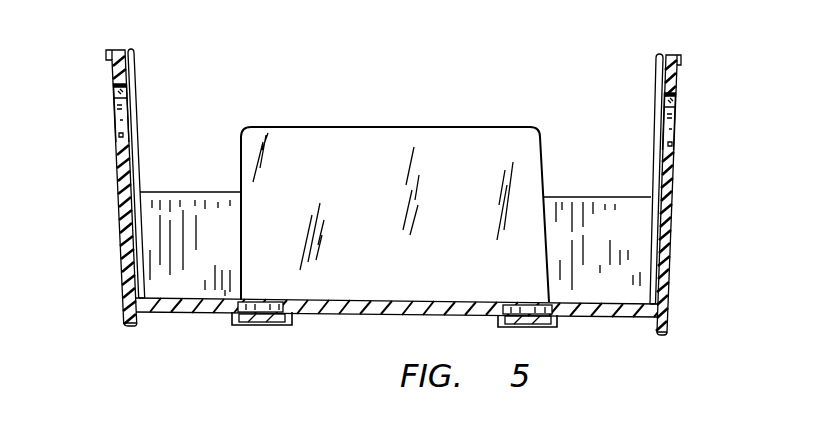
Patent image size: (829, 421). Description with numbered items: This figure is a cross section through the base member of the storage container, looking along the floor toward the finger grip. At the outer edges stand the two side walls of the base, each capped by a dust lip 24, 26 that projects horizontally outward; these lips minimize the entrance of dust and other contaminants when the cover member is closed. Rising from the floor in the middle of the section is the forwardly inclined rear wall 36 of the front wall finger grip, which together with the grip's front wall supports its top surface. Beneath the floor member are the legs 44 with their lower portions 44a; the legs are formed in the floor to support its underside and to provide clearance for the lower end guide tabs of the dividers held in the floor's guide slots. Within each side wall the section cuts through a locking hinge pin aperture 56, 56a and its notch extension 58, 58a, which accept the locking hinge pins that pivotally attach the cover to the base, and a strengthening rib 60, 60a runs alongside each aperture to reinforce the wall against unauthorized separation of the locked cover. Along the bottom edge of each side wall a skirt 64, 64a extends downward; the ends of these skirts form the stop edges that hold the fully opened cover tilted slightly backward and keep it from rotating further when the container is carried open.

The dust lip 24 is at (112, 62).
The dust lip 26 is at (681, 66).
The forwardly inclined rear wall 36 is at (376, 204).
The leg 44 is at (285, 273).
The clip flange 44a is at (292, 318).
The locking hinge pin aperture 56 is at (115, 122).
The wall section 56a is at (677, 135).
The notch extension 58 is at (114, 90).
The wall insert 58a is at (678, 98).
The strengthening rib 60 is at (137, 72).
The inner liner 60a is at (655, 82).
The skirt 64 is at (121, 307).
The skirt 64a is at (669, 313).